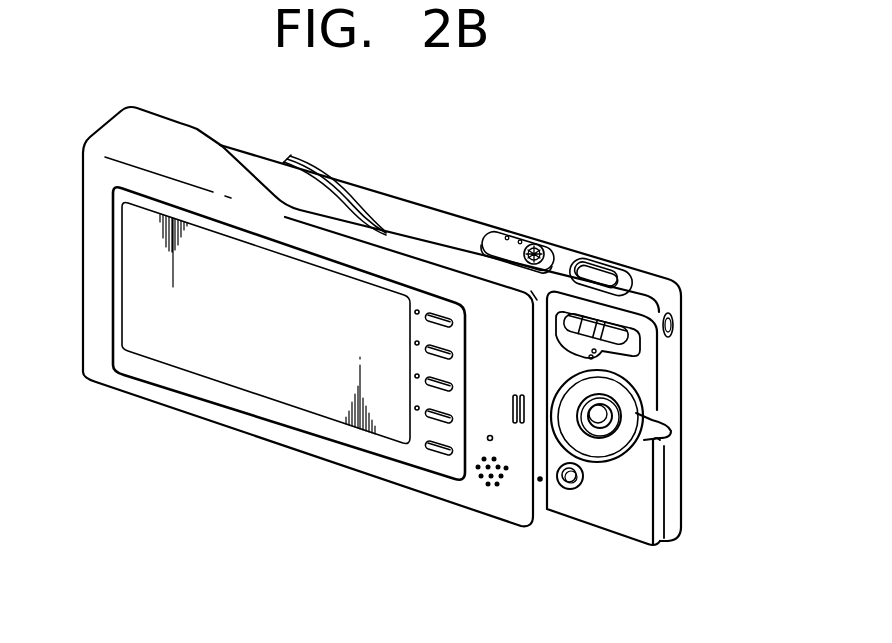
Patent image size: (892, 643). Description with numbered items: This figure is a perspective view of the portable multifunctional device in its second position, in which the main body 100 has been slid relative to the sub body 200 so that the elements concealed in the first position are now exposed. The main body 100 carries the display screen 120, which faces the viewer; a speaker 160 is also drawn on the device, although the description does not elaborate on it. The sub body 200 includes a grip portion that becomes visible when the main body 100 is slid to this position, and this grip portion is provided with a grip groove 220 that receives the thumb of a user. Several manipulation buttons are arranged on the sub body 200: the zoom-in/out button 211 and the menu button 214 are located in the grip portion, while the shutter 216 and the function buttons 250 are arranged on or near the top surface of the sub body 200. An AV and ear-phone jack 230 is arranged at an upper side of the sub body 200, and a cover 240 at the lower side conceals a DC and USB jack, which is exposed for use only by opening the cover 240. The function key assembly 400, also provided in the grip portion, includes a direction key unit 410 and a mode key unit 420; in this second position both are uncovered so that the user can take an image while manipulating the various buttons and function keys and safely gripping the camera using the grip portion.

The main body 100 is at (145, 404).
The display screen 120 is at (283, 385).
The speaker 160 is at (484, 489).
The sub body 200 is at (570, 219).
The zoom-in/out button 211 is at (578, 343).
The menu button 214 is at (565, 490).
The shutter 216 is at (601, 273).
The grip groove 220 is at (622, 333).
The AV and ear-phone jack 230 is at (674, 328).
The cover 240 is at (672, 489).
The function buttons 250 is at (507, 234).
The function key assembly 400 is at (685, 415).
The direction key unit 410 is at (618, 446).
The mode key unit 420 is at (637, 446).